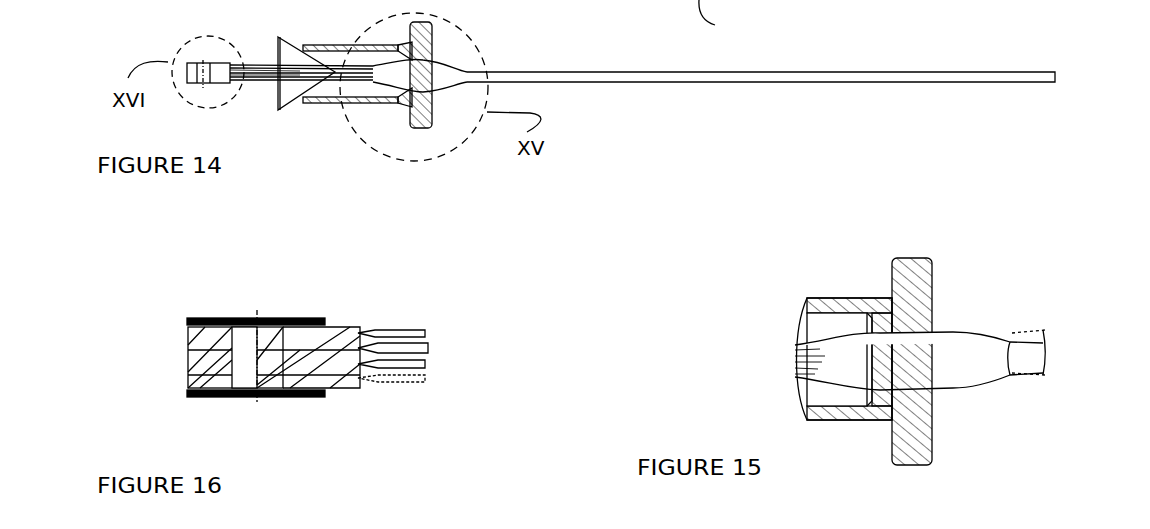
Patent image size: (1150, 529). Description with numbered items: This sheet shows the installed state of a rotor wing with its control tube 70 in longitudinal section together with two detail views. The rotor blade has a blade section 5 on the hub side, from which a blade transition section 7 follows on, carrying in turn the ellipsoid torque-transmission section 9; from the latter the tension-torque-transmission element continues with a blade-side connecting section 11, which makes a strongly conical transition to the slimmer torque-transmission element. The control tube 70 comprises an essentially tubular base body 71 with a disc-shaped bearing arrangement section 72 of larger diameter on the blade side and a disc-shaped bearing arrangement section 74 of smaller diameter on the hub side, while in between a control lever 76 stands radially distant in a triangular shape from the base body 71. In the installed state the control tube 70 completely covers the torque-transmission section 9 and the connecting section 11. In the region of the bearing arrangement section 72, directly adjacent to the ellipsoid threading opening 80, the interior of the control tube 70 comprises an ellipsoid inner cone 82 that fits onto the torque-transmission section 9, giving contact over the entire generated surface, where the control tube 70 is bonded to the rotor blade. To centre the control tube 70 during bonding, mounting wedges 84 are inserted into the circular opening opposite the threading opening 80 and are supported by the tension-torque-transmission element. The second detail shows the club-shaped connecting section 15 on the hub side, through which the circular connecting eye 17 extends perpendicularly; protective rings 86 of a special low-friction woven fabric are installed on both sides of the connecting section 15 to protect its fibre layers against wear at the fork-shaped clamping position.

In FIG. 14, the blade section 5 is at (760, 80).
In FIG. 15, the blade transition section 7 is at (1012, 352).
In FIG. 15, the torque-transmission section 9 is at (950, 378).
In FIG. 15, the blade-side connecting section 11 is at (847, 372).
In FIG. 16, the club-shaped connecting section 15 is at (198, 338).
In FIG. 16, the connecting eye 17 is at (243, 337).
In FIG. 15, the control tube 70 is at (1048, 233).
In FIG. 14, the base body 71 is at (338, 47).
In FIG. 14, the bearing arrangement section 72 is at (420, 19).
In FIG. 15, the bearing arrangement section 72 is at (922, 273).
In FIG. 14, the bearing arrangement section 74 is at (310, 52).
In FIG. 14, the control lever 76 is at (380, 33).
In FIG. 15, the threading opening 80 is at (983, 325).
In FIG. 15, the inner cone 82 is at (928, 332).
In FIG. 14, the mounting wedges 84 is at (290, 97).
In FIG. 16, the protective rings 86 is at (290, 318).